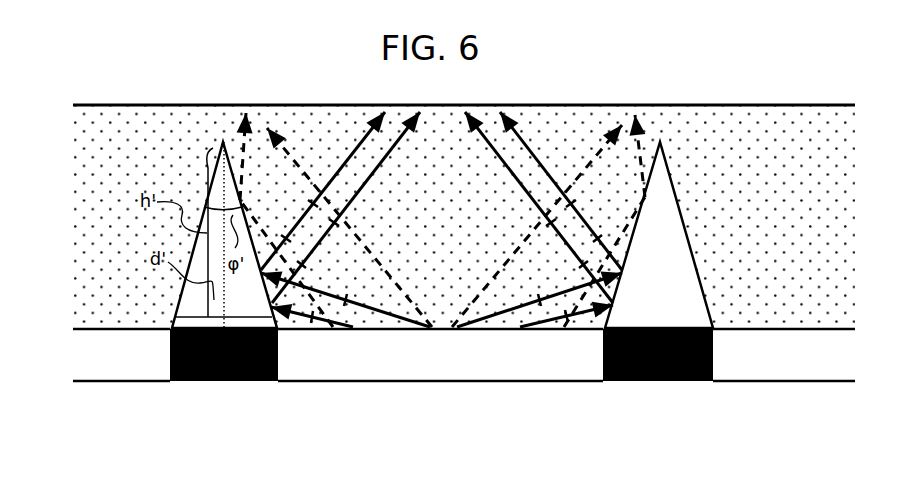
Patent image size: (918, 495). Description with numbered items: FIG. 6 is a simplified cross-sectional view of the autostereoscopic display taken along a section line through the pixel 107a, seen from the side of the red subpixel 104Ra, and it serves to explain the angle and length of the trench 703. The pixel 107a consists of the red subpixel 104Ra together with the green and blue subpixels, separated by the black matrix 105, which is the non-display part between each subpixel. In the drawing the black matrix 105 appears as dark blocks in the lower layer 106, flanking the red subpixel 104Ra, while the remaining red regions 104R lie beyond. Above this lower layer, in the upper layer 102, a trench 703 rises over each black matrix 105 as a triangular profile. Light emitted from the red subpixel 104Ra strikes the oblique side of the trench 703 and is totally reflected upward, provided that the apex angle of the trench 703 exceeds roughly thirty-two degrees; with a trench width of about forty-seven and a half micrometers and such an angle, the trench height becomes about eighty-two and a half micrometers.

The transparent layer 102 is at (62, 105).
The color filter layer 106 is at (62, 331).
The red color filter 104R is at (132, 383).
The black matrix 105 is at (215, 383).
The red subpixel 104Ra is at (392, 383).
The pixel 107a is at (660, 385).
The trench 703 is at (190, 305).